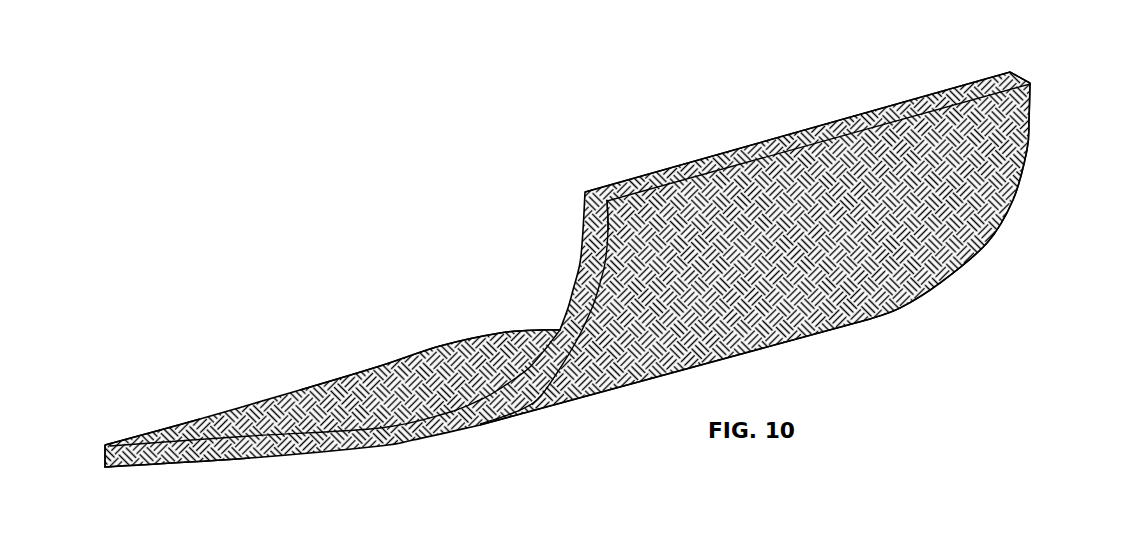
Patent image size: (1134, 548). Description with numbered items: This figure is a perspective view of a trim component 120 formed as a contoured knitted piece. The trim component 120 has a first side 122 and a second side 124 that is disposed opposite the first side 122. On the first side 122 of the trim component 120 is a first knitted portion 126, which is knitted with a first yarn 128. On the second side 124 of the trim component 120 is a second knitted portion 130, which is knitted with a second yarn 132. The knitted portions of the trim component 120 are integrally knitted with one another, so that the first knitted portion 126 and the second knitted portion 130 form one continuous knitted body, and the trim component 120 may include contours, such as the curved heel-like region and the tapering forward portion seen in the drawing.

The trim component 120 is at (424, 194).
The first side 122 is at (969, 223).
The second side 124 is at (395, 367).
The first knitted portion 126 is at (781, 329).
The first yarn 128 is at (872, 288).
The second knitted portion 130 is at (456, 341).
The second yarn 132 is at (260, 405).